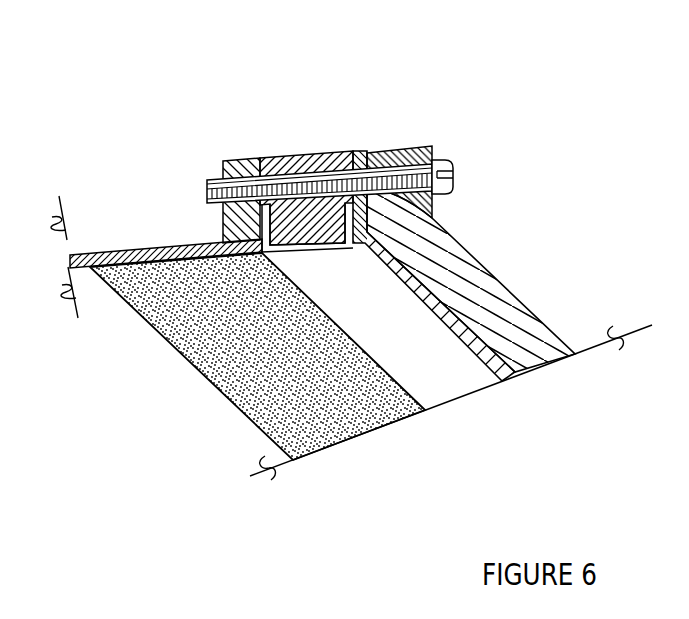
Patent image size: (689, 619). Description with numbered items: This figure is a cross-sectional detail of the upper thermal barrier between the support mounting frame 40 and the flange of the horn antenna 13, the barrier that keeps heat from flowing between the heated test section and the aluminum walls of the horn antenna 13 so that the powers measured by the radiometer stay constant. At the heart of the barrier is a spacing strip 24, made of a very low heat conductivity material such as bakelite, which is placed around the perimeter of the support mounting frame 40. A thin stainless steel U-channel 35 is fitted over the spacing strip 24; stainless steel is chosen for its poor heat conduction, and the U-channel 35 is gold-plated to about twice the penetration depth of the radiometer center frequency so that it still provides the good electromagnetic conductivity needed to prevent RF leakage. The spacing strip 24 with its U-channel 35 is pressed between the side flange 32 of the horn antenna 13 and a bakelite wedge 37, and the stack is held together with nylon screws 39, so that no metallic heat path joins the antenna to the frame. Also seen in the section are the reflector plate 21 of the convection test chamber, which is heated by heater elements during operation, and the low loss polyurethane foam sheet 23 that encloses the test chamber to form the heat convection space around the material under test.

The horn antenna 13 is at (192, 248).
The reflector plate 21 is at (478, 278).
The low loss polyurethane foam sheet 23 is at (347, 427).
The spacing strip 24 is at (285, 158).
The side flange 32 is at (237, 160).
The U-channel 35 is at (290, 243).
The bakelite wedge 37 is at (417, 143).
The nylon screw 39 is at (447, 170).
The support mounting frame 40 is at (508, 370).